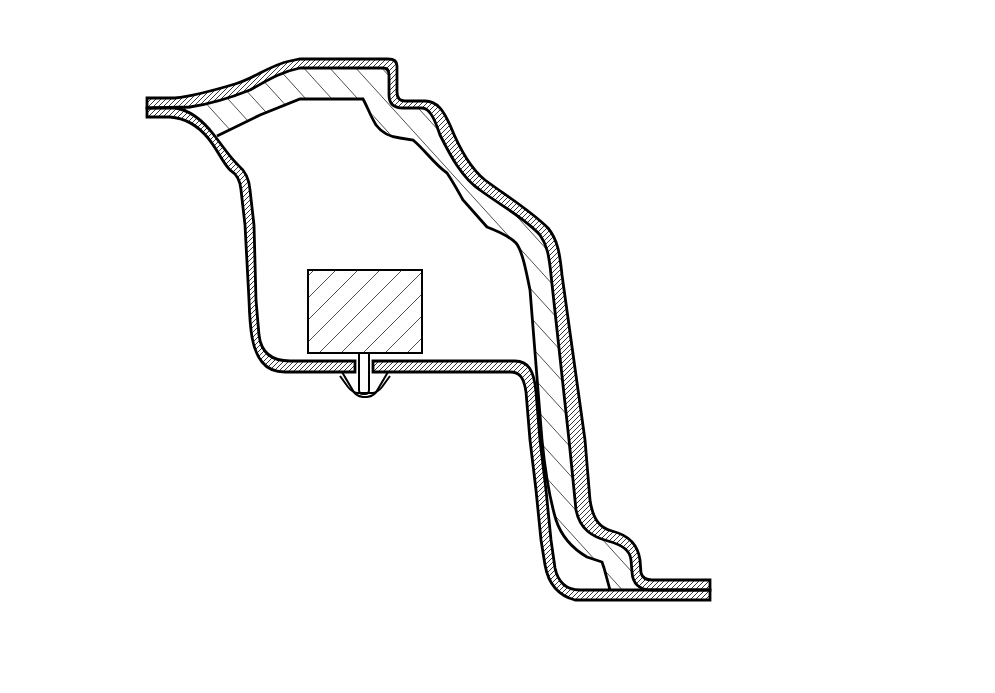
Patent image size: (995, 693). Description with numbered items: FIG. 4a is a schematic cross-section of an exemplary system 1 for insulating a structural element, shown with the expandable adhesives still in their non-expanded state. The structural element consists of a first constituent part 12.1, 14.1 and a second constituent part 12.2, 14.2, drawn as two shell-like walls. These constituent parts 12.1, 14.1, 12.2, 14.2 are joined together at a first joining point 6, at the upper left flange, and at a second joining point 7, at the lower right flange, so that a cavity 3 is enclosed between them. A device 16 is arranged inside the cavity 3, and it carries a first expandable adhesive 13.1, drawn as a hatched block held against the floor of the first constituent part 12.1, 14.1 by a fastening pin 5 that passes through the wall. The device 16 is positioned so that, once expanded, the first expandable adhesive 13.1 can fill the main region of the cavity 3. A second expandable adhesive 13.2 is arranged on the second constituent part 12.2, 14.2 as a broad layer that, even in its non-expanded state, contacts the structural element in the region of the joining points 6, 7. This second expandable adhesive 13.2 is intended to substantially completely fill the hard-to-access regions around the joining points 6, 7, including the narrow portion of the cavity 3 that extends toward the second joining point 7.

The system 1 is at (138, 58).
The cavity 3 is at (413, 236).
The fastening pin / clip 5 is at (365, 394).
The first joining point 6 is at (177, 108).
The second joining point 7 is at (682, 600).
The first constituent part 12.1 is at (383, 354).
The second constituent part 12.2 is at (453, 324).
The first expandable adhesive 13.1 is at (323, 318).
The second expandable adhesive 13.2 is at (477, 190).
The first constituent part 14.1 is at (242, 243).
The second constituent part 14.2 is at (567, 293).
The device 16 is at (333, 240).